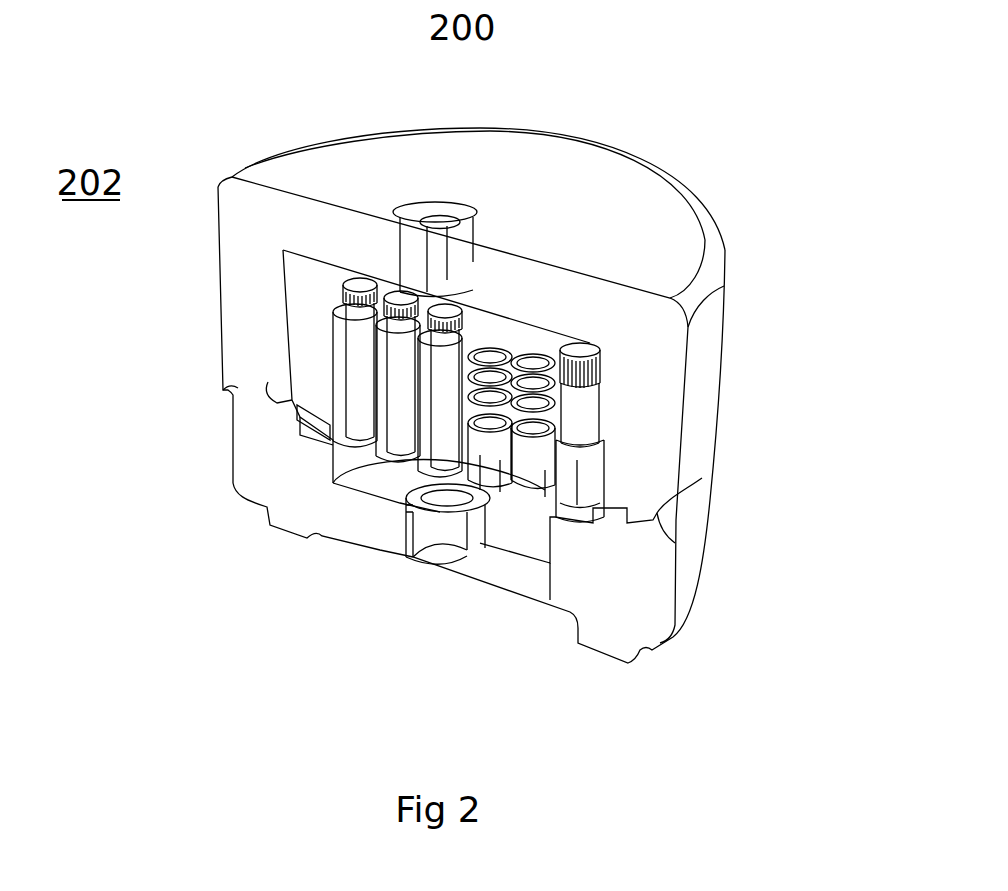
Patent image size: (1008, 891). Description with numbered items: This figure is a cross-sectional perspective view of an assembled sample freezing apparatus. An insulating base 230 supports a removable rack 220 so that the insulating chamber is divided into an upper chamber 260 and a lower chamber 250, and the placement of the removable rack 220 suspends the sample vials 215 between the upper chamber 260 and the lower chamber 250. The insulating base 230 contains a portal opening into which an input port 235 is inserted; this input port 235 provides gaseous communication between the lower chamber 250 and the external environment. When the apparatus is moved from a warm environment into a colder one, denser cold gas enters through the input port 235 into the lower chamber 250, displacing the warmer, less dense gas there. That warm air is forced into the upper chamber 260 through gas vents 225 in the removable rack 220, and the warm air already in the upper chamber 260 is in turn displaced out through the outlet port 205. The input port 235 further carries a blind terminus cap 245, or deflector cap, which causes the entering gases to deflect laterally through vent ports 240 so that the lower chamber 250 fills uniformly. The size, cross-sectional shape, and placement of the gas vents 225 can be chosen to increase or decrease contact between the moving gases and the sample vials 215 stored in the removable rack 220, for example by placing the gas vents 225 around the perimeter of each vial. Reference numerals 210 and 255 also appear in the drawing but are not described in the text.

The outlet port 205 is at (472, 238).
The housing 210 is at (640, 292).
The sample vials 215 is at (599, 395).
The removable rack 220 is at (606, 486).
The gas vents 225 is at (542, 430).
The insulating base 230 is at (634, 611).
The input port 235 is at (454, 556).
The vent ports 240 is at (384, 516).
The blind terminus cap 245 is at (416, 520).
The lower chamber 250 is at (331, 464).
The tab 255 is at (302, 408).
The upper chamber 260 is at (301, 257).